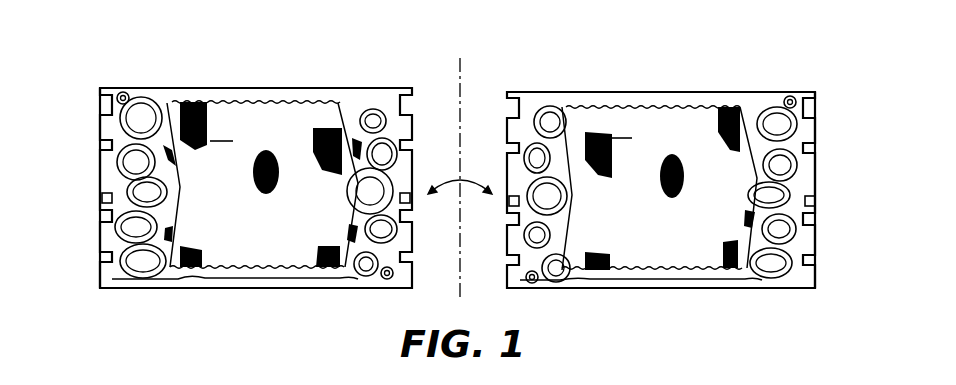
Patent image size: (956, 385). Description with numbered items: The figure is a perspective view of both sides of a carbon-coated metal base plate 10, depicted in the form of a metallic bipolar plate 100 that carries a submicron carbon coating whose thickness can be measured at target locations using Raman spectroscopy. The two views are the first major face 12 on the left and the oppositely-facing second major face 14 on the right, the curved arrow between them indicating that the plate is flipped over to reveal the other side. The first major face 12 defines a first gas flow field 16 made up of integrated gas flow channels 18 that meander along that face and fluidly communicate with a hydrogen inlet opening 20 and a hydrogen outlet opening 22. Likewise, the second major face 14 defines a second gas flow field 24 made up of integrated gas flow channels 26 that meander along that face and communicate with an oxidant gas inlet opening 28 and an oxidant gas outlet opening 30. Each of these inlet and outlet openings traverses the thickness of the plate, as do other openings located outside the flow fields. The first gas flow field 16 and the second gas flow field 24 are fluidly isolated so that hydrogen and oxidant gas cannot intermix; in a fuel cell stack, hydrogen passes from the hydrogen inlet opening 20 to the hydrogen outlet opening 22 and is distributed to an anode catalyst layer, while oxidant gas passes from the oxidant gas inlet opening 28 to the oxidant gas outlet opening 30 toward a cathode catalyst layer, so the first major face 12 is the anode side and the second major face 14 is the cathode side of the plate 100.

The carbon-coated metal base plate 10 is at (136, 50).
The metallic bipolar plate 100 is at (95, 120).
The first major face 12 is at (250, 195).
The second major face 14 is at (663, 189).
The first gas flow field 16 is at (248, 252).
The integrated gas flow channels 18 is at (196, 106).
The hydrogen inlet opening 20 is at (154, 104).
The hydrogen outlet opening 22 is at (363, 180).
The second gas flow field 24 is at (604, 258).
The integrated gas flow channels 26 is at (598, 130).
The oxidant gas inlet opening 28 is at (560, 116).
The oxidant gas outlet opening 30 is at (772, 190).